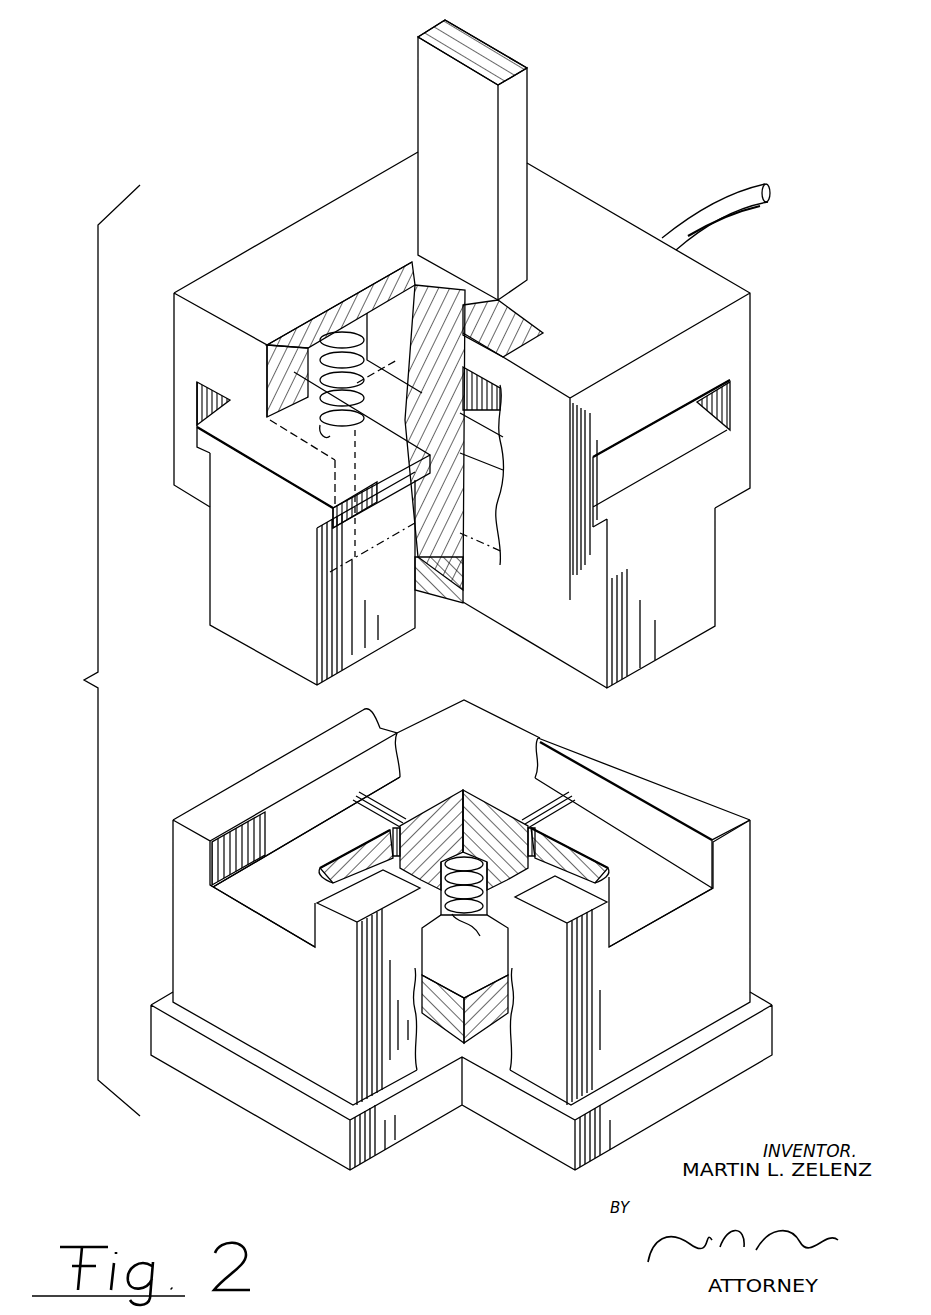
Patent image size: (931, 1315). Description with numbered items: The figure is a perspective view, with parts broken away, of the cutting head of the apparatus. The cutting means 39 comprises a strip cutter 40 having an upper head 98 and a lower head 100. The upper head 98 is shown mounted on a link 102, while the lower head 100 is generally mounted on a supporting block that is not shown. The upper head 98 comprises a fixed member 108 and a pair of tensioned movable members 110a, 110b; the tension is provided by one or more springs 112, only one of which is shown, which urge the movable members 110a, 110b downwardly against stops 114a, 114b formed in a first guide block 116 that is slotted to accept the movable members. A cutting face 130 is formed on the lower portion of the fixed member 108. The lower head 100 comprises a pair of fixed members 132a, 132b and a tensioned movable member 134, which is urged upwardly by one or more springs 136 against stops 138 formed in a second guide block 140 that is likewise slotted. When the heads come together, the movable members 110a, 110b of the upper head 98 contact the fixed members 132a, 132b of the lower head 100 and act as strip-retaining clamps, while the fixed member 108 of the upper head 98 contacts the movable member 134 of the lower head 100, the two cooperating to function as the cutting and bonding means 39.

The cutting means 39 is at (481, 359).
The strip cutter 40 is at (530, 491).
The upper head 98 is at (474, 310).
The lower head 100 is at (501, 935).
The link 102 is at (517, 101).
The fixed member 108 is at (441, 482).
The movable member 110a is at (268, 640).
The movable member 110b is at (685, 637).
The spring 112 is at (340, 333).
The stop 114a is at (195, 453).
The stop 114b is at (750, 462).
The first guide block 116 is at (222, 272).
The cutting face 130 is at (440, 597).
The fixed member 132a is at (275, 902).
The fixed member 132b is at (645, 912).
The movable member 134 is at (488, 808).
The spring 136 is at (480, 936).
The stop 138 is at (345, 733).
The second guide block 140 is at (494, 935).